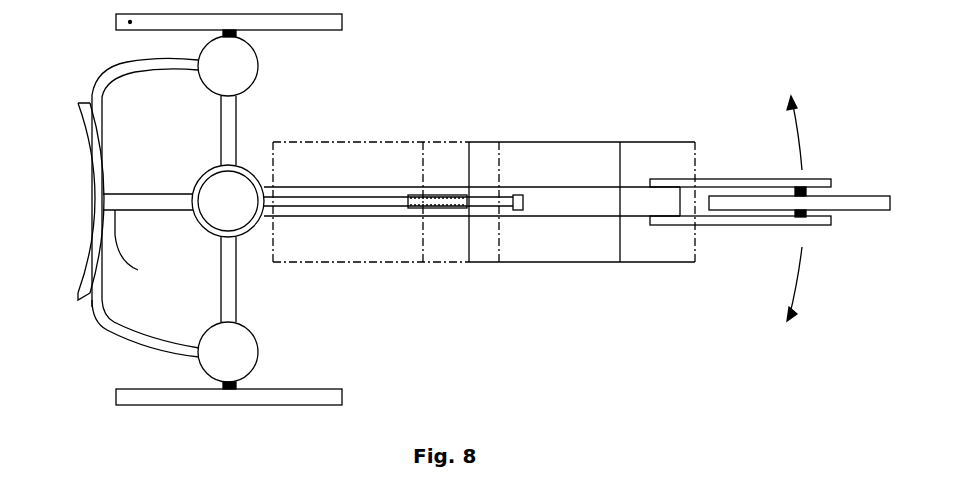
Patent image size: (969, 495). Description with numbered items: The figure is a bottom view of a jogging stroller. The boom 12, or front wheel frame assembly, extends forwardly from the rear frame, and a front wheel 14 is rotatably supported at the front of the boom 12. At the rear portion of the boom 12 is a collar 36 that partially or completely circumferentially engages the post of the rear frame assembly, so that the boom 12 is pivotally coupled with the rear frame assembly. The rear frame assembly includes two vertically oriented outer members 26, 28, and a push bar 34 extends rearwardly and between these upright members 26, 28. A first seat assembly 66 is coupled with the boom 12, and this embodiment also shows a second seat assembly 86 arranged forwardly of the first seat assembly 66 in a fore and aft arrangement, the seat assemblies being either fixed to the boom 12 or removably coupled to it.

The boom 12 is at (538, 185).
The front wheel 14 is at (876, 211).
The outer member 26 is at (201, 371).
The outer member 28 is at (259, 66).
The push bar 34 is at (92, 97).
The collar 36 is at (248, 232).
The seat assembly 66 is at (472, 173).
The second seat assembly 86 is at (396, 124).